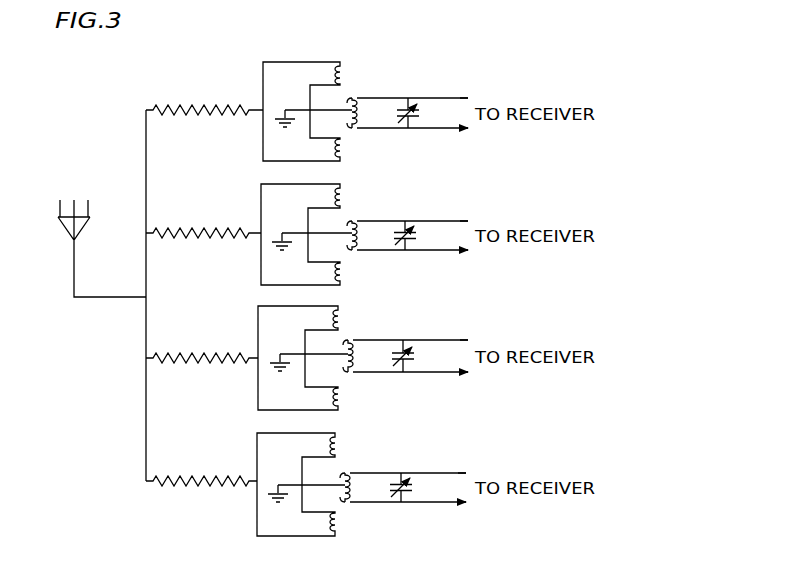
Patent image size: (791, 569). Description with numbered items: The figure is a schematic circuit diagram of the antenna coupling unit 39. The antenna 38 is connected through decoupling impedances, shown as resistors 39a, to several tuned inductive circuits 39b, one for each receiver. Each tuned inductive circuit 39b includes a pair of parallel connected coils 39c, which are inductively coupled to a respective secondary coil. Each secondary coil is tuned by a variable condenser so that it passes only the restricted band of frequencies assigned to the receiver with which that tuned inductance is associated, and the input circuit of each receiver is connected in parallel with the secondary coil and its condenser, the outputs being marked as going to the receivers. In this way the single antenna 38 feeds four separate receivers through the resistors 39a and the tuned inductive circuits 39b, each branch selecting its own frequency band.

The antenna 38 is at (76, 256).
The antenna coupling unit 39 is at (136, 172).
The resistor 39a is at (205, 105).
The tuned inductive circuit 39b is at (404, 298).
The coil 39c is at (343, 70).